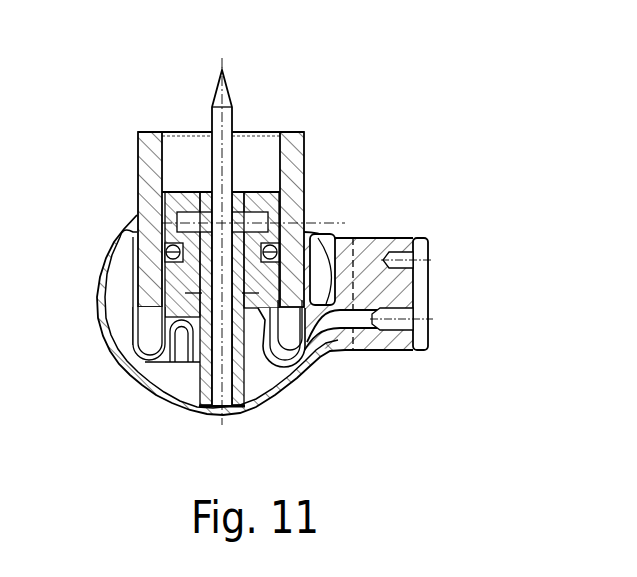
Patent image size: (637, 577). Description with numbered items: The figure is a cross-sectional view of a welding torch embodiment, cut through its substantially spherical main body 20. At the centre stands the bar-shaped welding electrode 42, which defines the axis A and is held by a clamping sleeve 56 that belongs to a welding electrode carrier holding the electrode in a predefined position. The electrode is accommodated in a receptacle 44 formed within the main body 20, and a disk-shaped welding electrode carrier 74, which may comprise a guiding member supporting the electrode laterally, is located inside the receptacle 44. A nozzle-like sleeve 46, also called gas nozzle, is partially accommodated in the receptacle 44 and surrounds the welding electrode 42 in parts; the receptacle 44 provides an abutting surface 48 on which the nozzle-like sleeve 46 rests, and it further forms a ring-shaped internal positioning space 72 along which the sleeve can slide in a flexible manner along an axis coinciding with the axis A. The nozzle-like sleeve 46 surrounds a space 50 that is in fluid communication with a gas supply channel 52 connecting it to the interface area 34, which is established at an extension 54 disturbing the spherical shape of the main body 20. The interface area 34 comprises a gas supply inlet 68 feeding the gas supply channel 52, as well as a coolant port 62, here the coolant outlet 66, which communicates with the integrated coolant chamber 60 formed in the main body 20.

The welding electrode 42 is at (221, 71).
The axis A is at (233, 108).
The nozzle-like sleeve 46 is at (150, 142).
The space 50 is at (259, 158).
The welding electrode carrier 74 is at (271, 176).
The receptacle 44 is at (299, 210).
The extension 54 is at (407, 238).
The coolant port 62 is at (347, 240).
The coolant outlet 66 is at (312, 282).
The main body 20 is at (117, 240).
The coolant chamber 60 is at (113, 291).
The gas supply inlet 68 is at (436, 312).
The interface area 34 is at (436, 329).
The ring-shaped internal positioning space 72 is at (151, 331).
The clamping sleeve 56 is at (203, 388).
The gas supply channel 52 is at (265, 385).
The abutting surface 48 is at (300, 318).